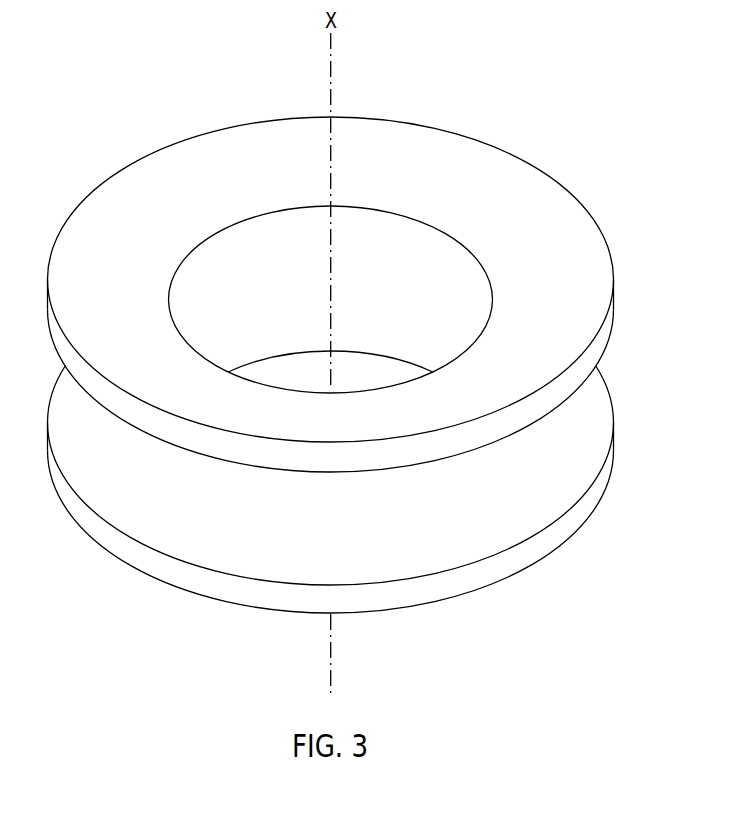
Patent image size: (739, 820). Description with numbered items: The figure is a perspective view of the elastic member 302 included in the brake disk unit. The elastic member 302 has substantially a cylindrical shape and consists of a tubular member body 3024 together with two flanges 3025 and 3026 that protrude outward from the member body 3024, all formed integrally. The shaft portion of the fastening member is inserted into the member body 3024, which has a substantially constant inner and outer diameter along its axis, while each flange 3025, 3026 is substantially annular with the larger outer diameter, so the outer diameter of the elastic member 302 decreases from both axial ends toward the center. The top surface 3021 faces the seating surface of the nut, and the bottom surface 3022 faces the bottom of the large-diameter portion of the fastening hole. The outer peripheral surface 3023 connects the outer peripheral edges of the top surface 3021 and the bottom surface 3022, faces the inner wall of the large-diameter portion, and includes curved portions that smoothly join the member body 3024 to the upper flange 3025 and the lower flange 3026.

The elastic member 302 is at (373, 367).
The top surface 3021 is at (398, 142).
The bottom surface 3022 is at (405, 612).
The outer peripheral surface 3023 is at (562, 432).
The member body 3024 is at (459, 282).
The flange 3025 is at (610, 328).
The flange 3026 is at (603, 484).